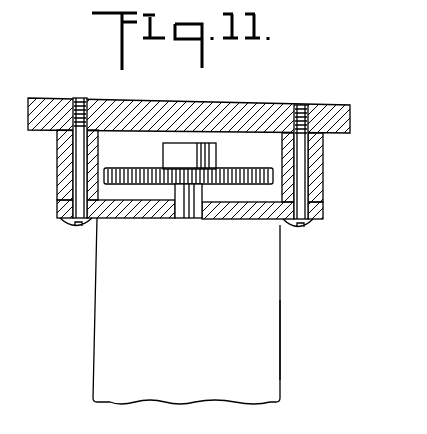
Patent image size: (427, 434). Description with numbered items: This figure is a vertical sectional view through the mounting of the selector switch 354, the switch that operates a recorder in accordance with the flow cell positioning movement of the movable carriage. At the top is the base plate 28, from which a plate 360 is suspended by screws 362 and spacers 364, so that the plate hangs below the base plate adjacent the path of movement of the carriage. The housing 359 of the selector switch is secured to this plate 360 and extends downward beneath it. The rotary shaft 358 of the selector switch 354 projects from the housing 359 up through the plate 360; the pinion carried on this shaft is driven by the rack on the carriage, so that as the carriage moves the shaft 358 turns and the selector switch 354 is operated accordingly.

The base plate 28 is at (243, 109).
The spacers 364 is at (323, 166).
The plate 360 is at (323, 212).
The screws 362 is at (305, 228).
The rotary shaft 358 is at (173, 219).
The selector switch 354 is at (292, 312).
The housing 359 is at (281, 345).